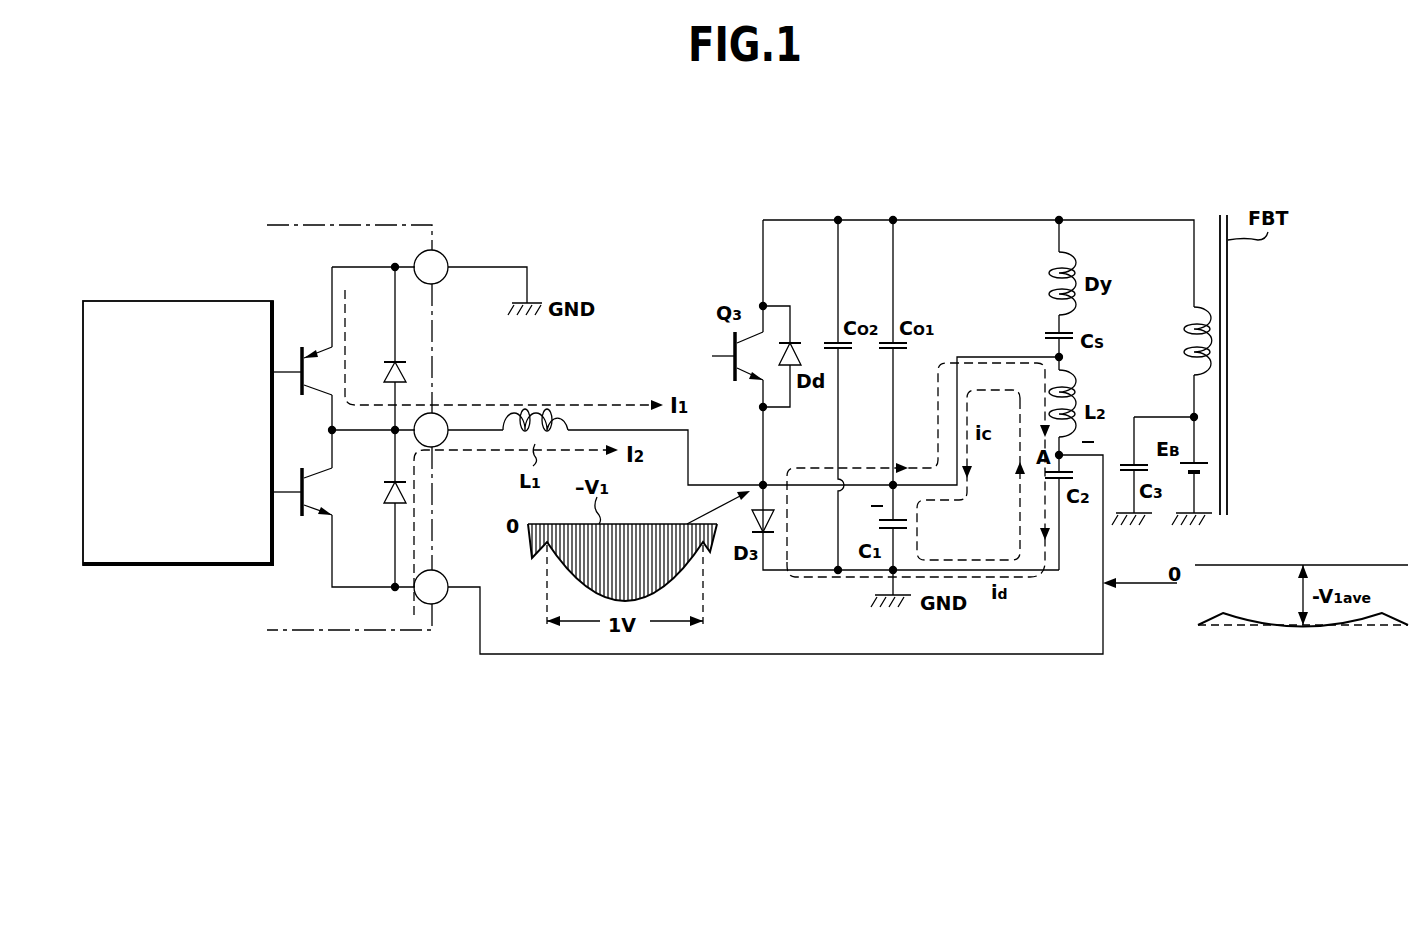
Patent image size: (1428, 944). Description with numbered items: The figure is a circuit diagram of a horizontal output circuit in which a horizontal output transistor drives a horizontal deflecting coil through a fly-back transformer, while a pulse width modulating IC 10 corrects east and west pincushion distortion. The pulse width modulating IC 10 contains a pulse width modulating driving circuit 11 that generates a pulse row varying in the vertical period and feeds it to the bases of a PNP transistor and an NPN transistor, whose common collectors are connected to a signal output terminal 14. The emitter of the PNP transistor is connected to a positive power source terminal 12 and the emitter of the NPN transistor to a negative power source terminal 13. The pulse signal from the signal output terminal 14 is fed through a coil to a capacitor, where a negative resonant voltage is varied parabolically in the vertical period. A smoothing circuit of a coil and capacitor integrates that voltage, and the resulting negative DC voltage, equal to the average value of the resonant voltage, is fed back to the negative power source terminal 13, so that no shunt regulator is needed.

The pulse width modulating IC 10 is at (376, 196).
The pulse width modulating driving circuit 11 is at (202, 301).
The positive power source terminal 12 is at (446, 256).
The negative power source terminal 13 is at (441, 574).
The signal output terminal 14 is at (446, 417).